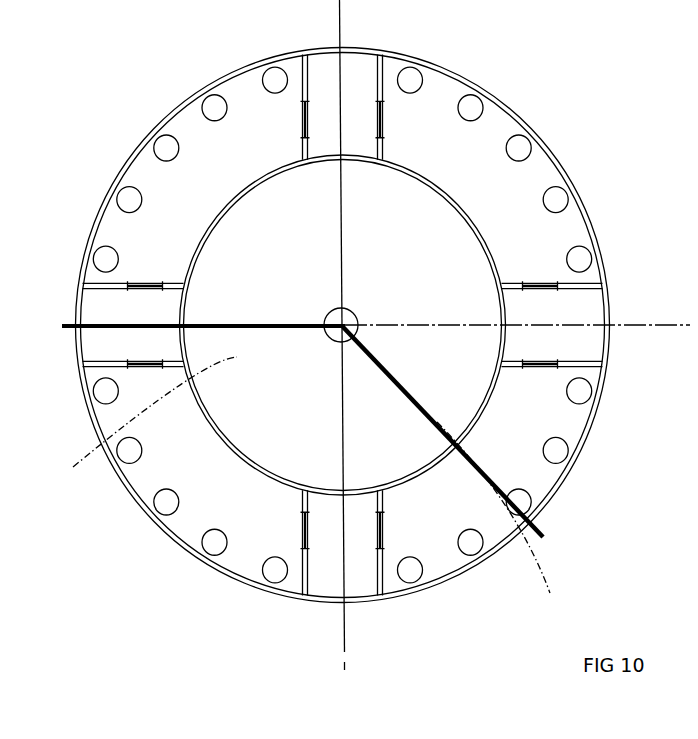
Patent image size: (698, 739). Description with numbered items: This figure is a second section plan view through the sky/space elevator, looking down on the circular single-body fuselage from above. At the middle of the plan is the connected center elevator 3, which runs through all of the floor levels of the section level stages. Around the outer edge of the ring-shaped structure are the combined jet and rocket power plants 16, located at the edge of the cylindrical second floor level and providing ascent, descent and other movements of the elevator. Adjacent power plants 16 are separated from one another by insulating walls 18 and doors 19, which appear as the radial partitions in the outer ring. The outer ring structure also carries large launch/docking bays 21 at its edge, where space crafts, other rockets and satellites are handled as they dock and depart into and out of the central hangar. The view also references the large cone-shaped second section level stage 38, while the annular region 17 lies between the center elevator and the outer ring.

The center elevator 3 is at (348, 333).
The combined jet and rocket power plant 16 is at (568, 452).
The flange annular body 17 is at (465, 507).
The insulating walls 18 is at (243, 462).
The doors 19 is at (540, 366).
The launch/docking bays 21 is at (593, 333).
The second section level stage 38 is at (307, 490).